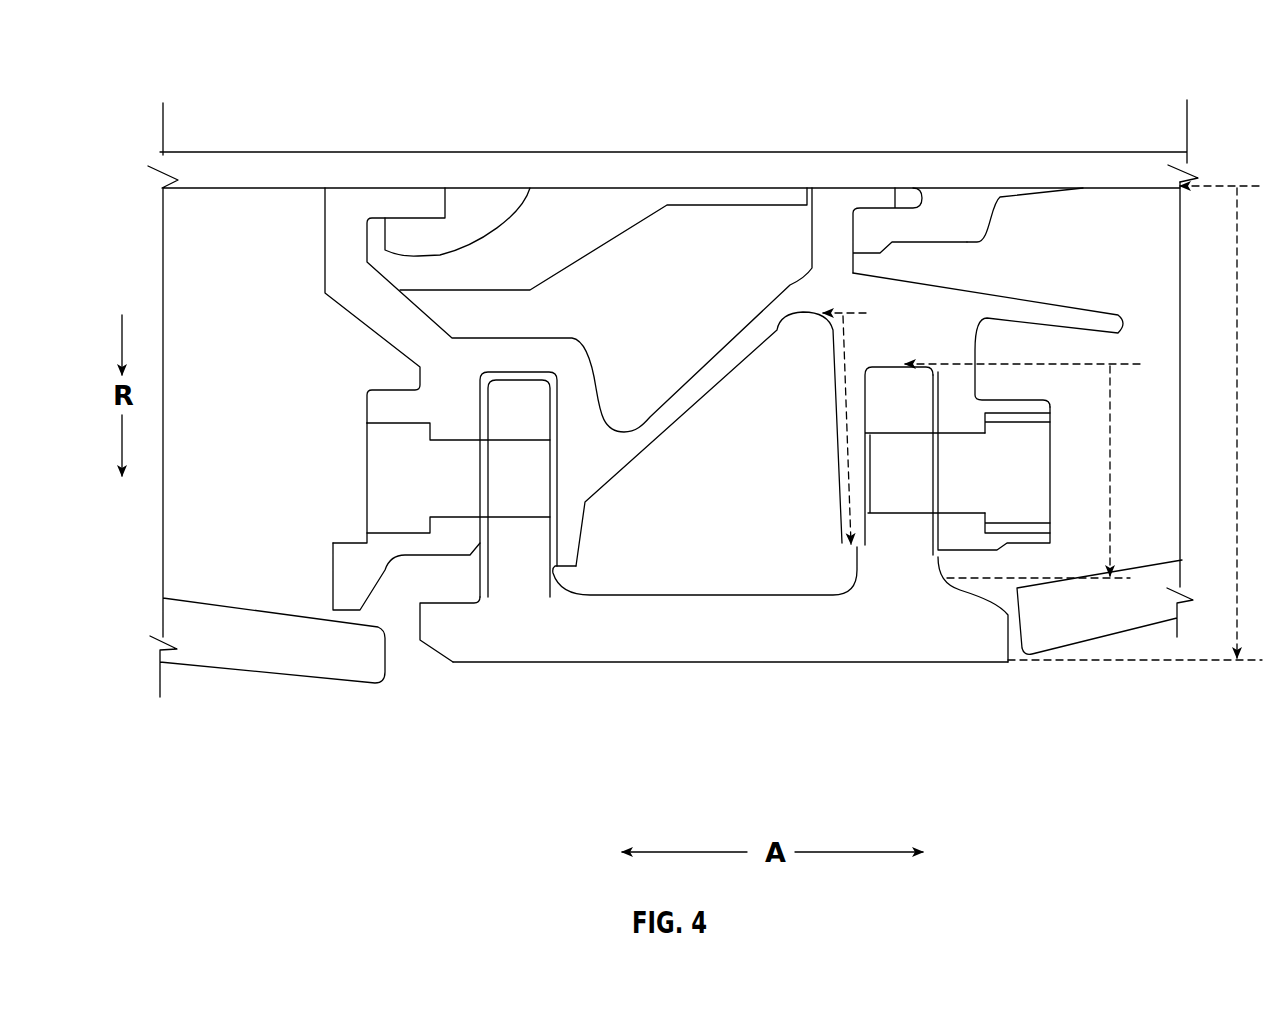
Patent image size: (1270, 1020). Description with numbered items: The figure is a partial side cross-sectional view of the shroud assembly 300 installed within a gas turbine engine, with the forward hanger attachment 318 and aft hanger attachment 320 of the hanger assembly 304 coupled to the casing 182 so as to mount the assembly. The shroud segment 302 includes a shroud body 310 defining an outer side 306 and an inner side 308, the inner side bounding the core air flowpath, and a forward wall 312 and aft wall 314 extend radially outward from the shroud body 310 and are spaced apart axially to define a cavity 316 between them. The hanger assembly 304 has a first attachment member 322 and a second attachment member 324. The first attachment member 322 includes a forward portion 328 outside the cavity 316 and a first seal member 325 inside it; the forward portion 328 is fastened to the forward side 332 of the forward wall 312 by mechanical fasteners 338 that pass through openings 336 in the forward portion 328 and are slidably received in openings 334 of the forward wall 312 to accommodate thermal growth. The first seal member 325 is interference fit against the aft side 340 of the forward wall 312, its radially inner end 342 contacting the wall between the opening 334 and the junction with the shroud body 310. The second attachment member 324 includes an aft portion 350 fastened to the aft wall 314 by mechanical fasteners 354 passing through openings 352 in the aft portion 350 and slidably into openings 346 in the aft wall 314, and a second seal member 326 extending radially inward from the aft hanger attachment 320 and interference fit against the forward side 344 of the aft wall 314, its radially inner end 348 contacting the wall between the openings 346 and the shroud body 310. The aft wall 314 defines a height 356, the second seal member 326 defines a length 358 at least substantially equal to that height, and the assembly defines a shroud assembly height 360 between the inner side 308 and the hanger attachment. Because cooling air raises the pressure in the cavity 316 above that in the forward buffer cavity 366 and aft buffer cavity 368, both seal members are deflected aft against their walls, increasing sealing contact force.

The casing 182 is at (437, 157).
The shroud assembly 300 is at (722, 158).
The shroud segment 302 is at (981, 744).
The hanger assembly 304 is at (734, 225).
The outer side 306 is at (787, 586).
The inner side 308 is at (705, 665).
The shroud body 310 is at (650, 638).
The forward wall 312 is at (587, 338).
The aft wall 314 is at (897, 380).
The cavity 316 is at (705, 541).
The forward hanger attachment 318 is at (397, 208).
The aft hanger attachment 320 is at (872, 190).
The first attachment member 322 is at (506, 296).
The second attachment member 324 is at (931, 254).
The first seal member 325 is at (573, 427).
The second seal member 326 is at (840, 447).
The forward portion 328 is at (423, 403).
The forward side 332 is at (477, 562).
The openings 334 is at (525, 505).
The openings 336 is at (434, 489).
The mechanical fasteners 338 is at (367, 467).
The aft side 340 is at (563, 391).
The radially inner end 342 is at (582, 572).
The forward side 344 is at (860, 390).
The openings 346 is at (903, 505).
The radially inner end 348 is at (853, 558).
The aft portion 350 is at (970, 407).
The openings 352 is at (954, 500).
The mechanical fasteners 354 is at (1043, 468).
The height 356 is at (1112, 534).
The length 358 is at (850, 490).
The shroud assembly height 360 is at (1237, 320).
The forward buffer cavity 366 is at (267, 442).
The aft buffer cavity 368 is at (1039, 471).